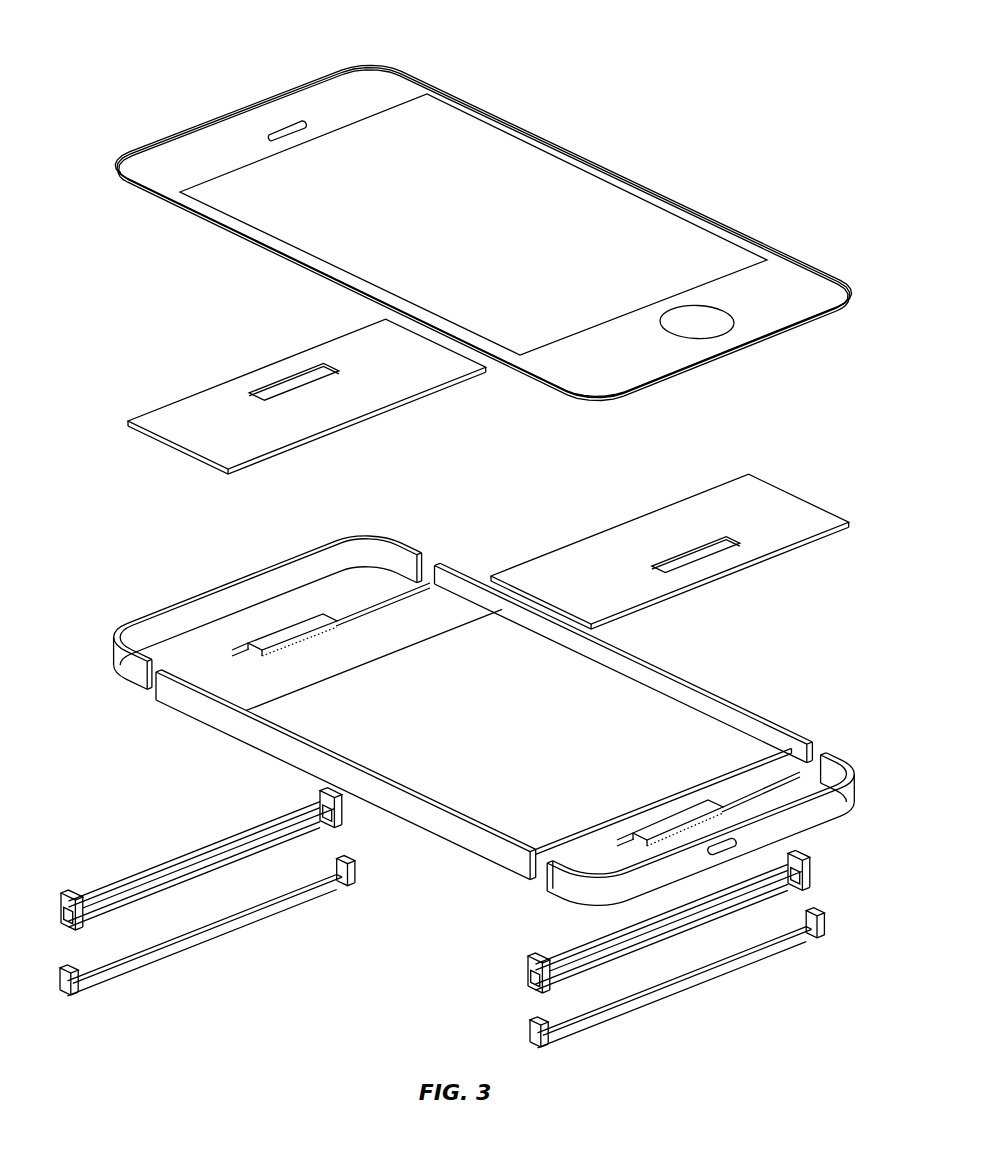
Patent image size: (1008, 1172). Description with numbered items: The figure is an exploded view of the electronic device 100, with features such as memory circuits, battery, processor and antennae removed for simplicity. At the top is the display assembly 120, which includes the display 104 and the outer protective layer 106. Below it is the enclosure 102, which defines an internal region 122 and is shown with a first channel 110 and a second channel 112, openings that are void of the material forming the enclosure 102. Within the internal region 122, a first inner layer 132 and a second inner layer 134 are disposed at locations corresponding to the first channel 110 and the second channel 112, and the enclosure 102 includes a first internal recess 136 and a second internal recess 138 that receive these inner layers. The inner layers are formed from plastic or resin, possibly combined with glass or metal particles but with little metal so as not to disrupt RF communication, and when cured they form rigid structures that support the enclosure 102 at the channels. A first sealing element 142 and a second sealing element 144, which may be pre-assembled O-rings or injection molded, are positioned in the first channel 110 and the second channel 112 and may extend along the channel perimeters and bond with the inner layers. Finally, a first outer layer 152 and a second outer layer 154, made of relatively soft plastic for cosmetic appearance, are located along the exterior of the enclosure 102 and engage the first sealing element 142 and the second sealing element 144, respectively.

The electronic device 100 is at (143, 70).
The enclosure 102 is at (143, 582).
The display 104 is at (471, 224).
The outer protective layer 106 is at (385, 95).
The first channel 110 is at (140, 704).
The second channel 112 is at (535, 888).
The display assembly 120 is at (722, 168).
The internal region 122 is at (640, 703).
The first inner layer 132 is at (202, 439).
The second inner layer 134 is at (570, 586).
The first internal recess 136 is at (382, 639).
The second internal recess 138 is at (719, 781).
The first sealing element 142 is at (158, 852).
The second sealing element 144 is at (828, 888).
The first outer layer 152 is at (288, 932).
The second outer layer 154 is at (720, 996).